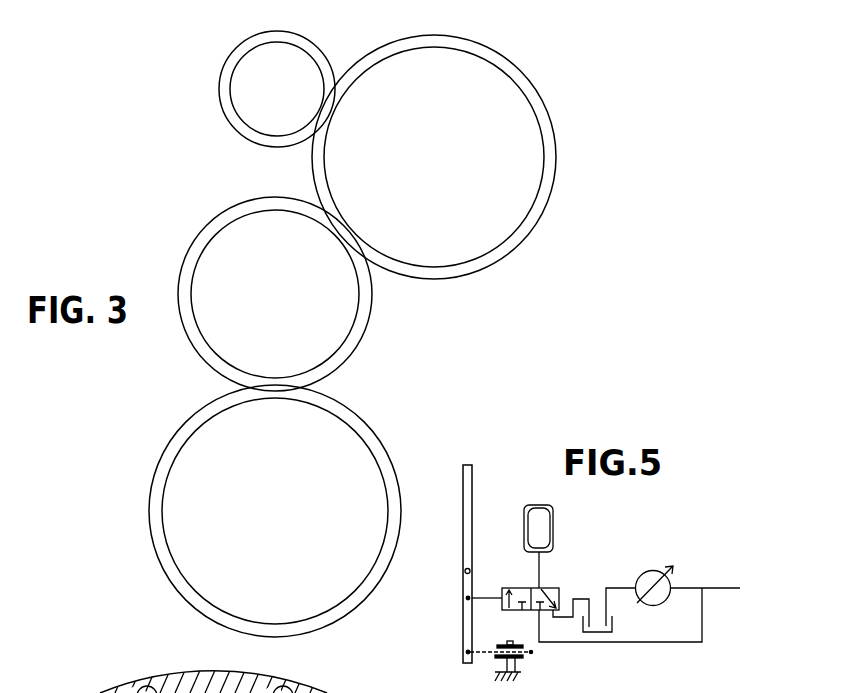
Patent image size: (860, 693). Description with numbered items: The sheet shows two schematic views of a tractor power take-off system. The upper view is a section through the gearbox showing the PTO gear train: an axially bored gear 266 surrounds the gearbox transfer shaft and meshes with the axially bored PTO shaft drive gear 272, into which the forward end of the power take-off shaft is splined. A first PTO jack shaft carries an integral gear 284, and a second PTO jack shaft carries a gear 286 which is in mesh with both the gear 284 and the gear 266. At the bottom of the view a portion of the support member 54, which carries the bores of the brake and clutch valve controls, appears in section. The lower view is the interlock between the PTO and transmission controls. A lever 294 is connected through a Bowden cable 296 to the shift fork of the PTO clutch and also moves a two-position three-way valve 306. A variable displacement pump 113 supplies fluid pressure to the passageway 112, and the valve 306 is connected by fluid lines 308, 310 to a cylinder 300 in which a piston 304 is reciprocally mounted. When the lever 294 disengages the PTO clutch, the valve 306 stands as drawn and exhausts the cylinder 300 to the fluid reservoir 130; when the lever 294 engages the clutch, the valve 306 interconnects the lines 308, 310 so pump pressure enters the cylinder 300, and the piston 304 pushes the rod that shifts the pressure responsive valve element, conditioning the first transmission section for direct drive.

In FIG. 3, the gear 284 is at (331, 60).
In FIG. 3, the gear 286 is at (556, 175).
In FIG. 3, the axially bored gear 266 is at (348, 362).
In FIG. 3, the PTO shaft drive gear 272 is at (401, 480).
In FIG. 3, the support member 54 is at (100, 692).
In FIG. 5, the lever 294 is at (466, 628).
In FIG. 5, the Bowden cable 296 is at (526, 659).
In FIG. 5, the cylinder 300 is at (554, 546).
In FIG. 5, the piston 304 is at (547, 527).
In FIG. 5, the two-position three-way valve 306 is at (555, 591).
In FIG. 5, the fluid line 308 is at (538, 573).
In FIG. 5, the variable displacement pump 113 is at (648, 572).
In FIG. 5, the passageway 112 is at (717, 587).
In FIG. 5, the fluid reservoir 130 is at (613, 623).
In FIG. 5, the fluid line 310 is at (643, 643).